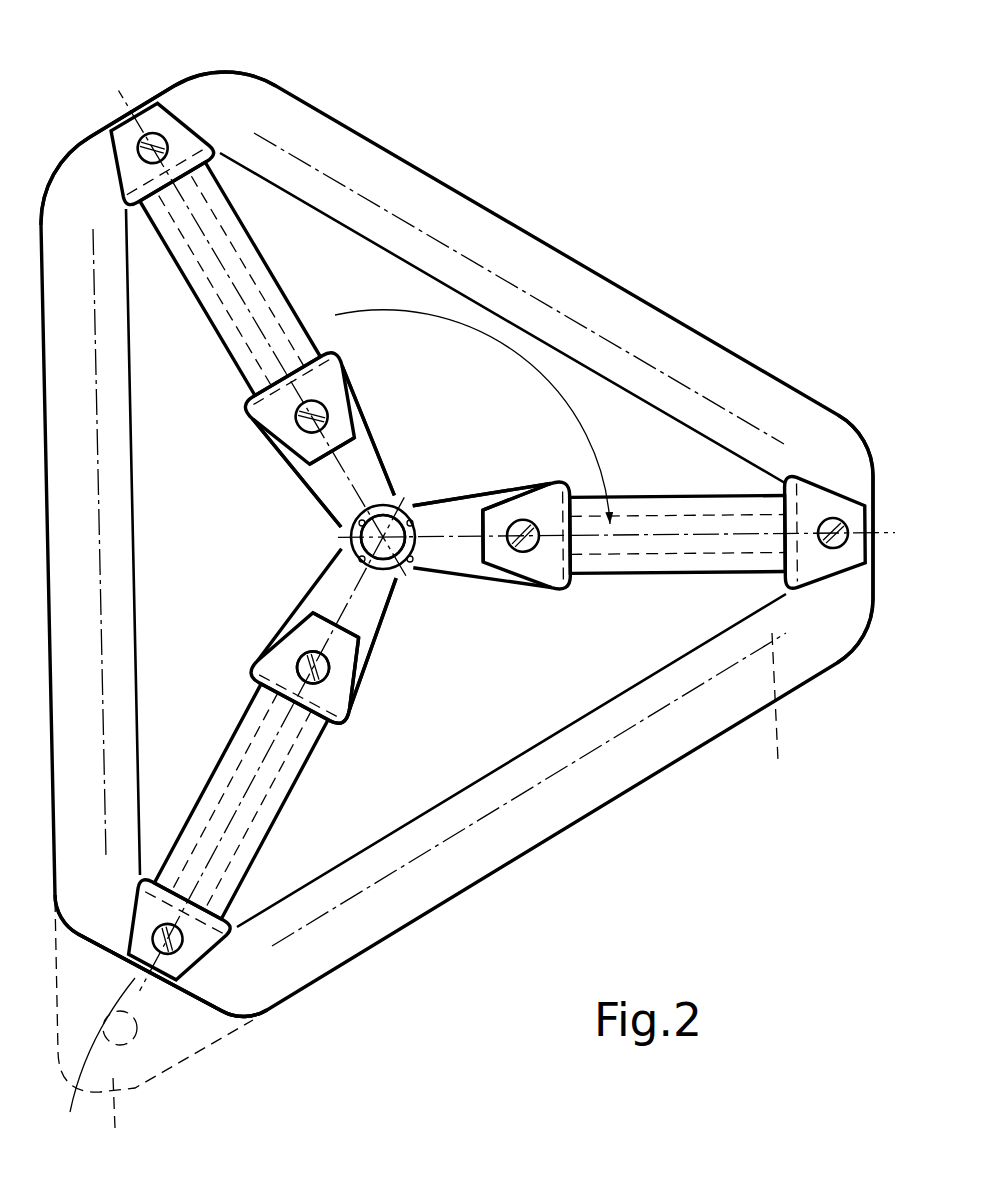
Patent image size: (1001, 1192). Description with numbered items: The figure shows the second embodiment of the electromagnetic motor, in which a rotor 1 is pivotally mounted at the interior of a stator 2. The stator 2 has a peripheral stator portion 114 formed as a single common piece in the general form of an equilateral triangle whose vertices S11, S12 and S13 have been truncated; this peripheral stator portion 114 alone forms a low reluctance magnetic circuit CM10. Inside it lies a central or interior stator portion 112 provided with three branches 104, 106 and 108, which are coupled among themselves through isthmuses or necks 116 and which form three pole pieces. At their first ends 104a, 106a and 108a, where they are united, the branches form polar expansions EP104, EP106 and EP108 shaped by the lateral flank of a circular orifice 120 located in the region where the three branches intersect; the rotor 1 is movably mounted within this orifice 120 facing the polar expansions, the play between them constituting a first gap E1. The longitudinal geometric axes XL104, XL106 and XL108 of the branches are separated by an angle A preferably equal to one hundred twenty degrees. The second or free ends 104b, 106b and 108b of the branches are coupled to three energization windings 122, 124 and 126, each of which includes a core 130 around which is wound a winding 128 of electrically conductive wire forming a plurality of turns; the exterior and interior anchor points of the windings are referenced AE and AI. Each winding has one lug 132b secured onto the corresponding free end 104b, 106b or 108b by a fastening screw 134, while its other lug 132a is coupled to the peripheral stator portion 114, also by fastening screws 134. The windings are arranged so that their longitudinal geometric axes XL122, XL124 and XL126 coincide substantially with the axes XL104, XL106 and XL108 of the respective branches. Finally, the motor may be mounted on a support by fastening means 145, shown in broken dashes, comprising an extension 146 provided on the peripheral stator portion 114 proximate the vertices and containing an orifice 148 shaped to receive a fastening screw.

The stator 2 is at (640, 785).
The peripheral stator portion 114 is at (456, 880).
The vertex S13 is at (192, 97).
The vertex S11 is at (847, 468).
The vertex S12 is at (213, 997).
The core 130 is at (268, 978).
The isthmuses or necks 116 is at (340, 546).
The first gap E1 is at (410, 587).
The circular orifice 120 is at (392, 498).
The rotor 1 is at (382, 533).
The branch 104 is at (462, 516).
The first end 104a is at (424, 489).
The second or free end 104b is at (546, 481).
The central or interior stator portion 112 is at (477, 580).
The polar expansion EP104 is at (412, 548).
The longitudinal geometric axis XL104 is at (509, 567).
The energization winding 122 is at (689, 494).
The longitudinal geometric axis XL122 is at (676, 542).
The angle A is at (593, 440).
The low reluctance magnetic circuit CM10 is at (789, 716).
The branch 108 is at (368, 440).
The first end 108a is at (330, 530).
The second or free end 108b is at (248, 438).
The interior anchor point AI is at (338, 397).
The polar expansion EP108 is at (338, 512).
The longitudinal geometric axis XL108 is at (255, 418).
The energization winding 126 is at (264, 248).
The longitudinal geometric axis XL126 is at (222, 267).
The exterior anchor point AE is at (125, 133).
The branch 106 is at (323, 604).
The first end 106a is at (393, 607).
The second or free end 106b is at (356, 709).
The lug 132b is at (274, 662).
The fastening screws 134 is at (274, 641).
The polar expansion EP106 is at (345, 552).
The longitudinal geometric axis XL106 is at (347, 733).
The energization winding 124 is at (280, 831).
The longitudinal geometric axis XL124 is at (268, 766).
The winding 128 is at (250, 857).
The fastening means 145 is at (172, 1082).
The lug 132a is at (128, 1016).
The extension 146 is at (118, 1116).
The orifice 148 is at (70, 1112).